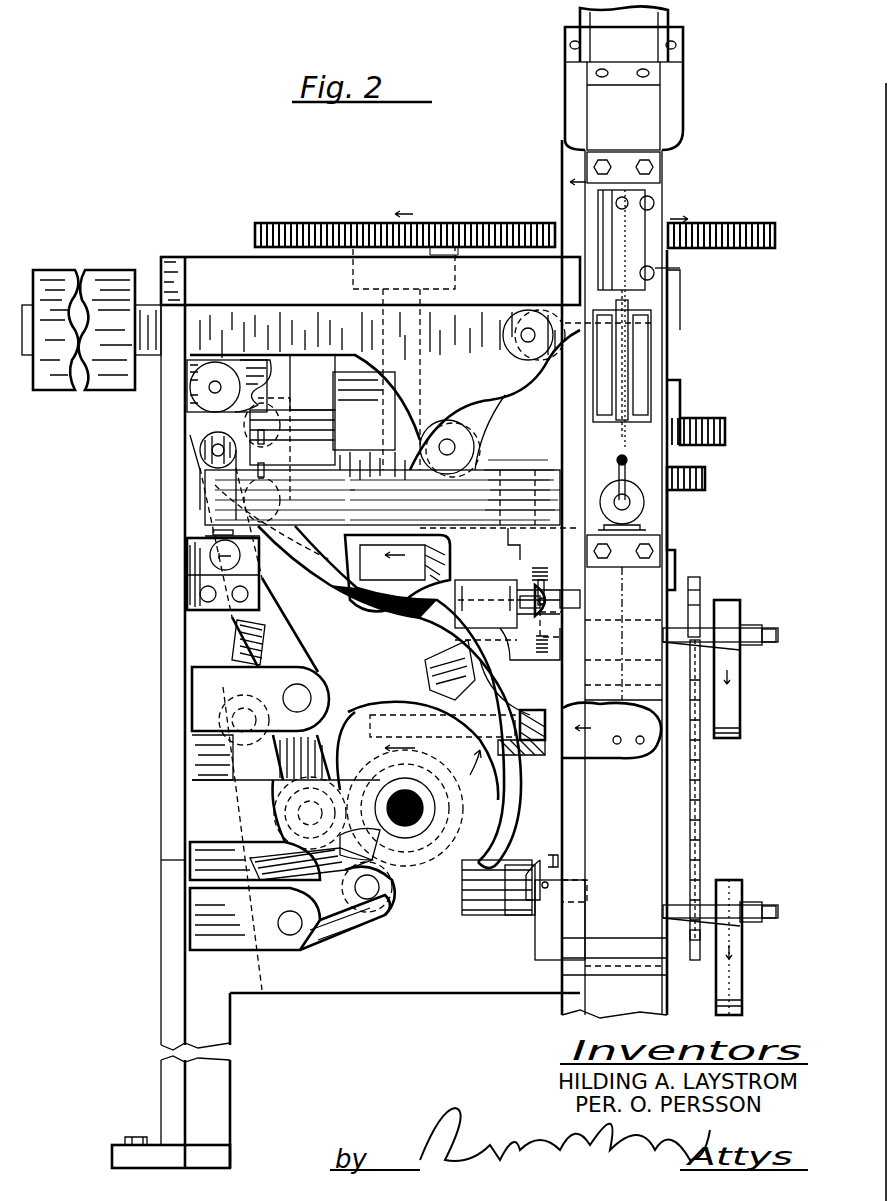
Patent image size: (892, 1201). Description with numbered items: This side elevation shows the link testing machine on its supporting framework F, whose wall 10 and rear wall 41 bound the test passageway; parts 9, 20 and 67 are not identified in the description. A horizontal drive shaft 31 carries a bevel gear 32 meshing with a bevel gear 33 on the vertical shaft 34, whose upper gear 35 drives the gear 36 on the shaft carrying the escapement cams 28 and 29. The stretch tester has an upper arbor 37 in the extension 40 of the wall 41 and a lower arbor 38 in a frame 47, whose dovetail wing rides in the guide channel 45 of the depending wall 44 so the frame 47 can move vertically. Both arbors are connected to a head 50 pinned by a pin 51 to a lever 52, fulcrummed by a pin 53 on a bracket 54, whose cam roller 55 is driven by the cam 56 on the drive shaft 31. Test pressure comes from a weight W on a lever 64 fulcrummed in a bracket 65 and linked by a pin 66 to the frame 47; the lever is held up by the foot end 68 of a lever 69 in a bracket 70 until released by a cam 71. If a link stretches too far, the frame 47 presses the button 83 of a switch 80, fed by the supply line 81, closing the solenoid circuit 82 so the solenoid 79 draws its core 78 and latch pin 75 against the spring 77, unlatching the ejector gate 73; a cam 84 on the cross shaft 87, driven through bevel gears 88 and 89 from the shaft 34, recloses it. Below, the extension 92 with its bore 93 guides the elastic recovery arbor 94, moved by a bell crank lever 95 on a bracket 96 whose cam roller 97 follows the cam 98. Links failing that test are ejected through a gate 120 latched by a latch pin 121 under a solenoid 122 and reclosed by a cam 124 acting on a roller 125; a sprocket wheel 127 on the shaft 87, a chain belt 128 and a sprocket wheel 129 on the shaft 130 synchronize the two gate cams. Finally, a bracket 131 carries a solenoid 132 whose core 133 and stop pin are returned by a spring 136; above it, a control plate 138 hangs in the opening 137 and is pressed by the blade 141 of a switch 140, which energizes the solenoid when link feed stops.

The frame column head 9 is at (650, 130).
The wall 10 is at (650, 366).
The upper housing 20 is at (650, 32).
The cam 28 is at (722, 428).
The cam 29 is at (706, 478).
The drive shaft 31 is at (348, 876).
The bevel gear 32 is at (440, 808).
The bevel gear 33 is at (450, 730).
The vertical shaft 34 is at (395, 542).
The gear 35 is at (462, 224).
The gear 36 is at (752, 226).
The upper arbor 37 is at (305, 418).
The lower arbor 38 is at (320, 462).
The extension 40 is at (345, 382).
The rear wall 41 is at (568, 998).
The depending wall 44 is at (508, 542).
The dovetail guide channel 45 is at (468, 528).
The frame 47 is at (518, 492).
The head 50 is at (256, 392).
The pin 51 is at (210, 452).
The lever 52 is at (298, 655).
The pin 53 is at (300, 698).
The bracket 54 is at (218, 712).
The cam roller 55 is at (310, 870).
The cam 56 is at (398, 888).
The lever 64 is at (212, 322).
The bracket 65 is at (535, 325).
The pin 66 is at (445, 442).
The lever 67 is at (458, 436).
The foot end 68 is at (252, 372).
The lever 69 is at (320, 578).
The bracket 70 is at (200, 402).
The cam 71 is at (445, 895).
The gate 73 is at (615, 708).
The latch pin 75 is at (560, 600).
The spring 77 is at (545, 572).
The core 78 is at (528, 592).
The solenoid 79 is at (512, 660).
The switch 80 is at (202, 570).
The supply line 81 is at (240, 605).
The solenoid circuit 82 is at (328, 552).
The button 83 is at (200, 534).
The cam 84 is at (730, 708).
The cross shaft 87 is at (724, 600).
The bevel gear 88 is at (468, 690).
The bevel gear 89 is at (455, 588).
The extension 92 is at (524, 748).
The bore 93 is at (498, 696).
The arbor 94 is at (380, 720).
The bell crank lever 95 is at (240, 870).
The bracket 96 is at (295, 945).
The cam roller 97 is at (388, 915).
The cam 98 is at (370, 712).
The ejector gate 120 is at (566, 960).
The latch pin 121 is at (572, 900).
The solenoid 122 is at (510, 915).
The cam 124 is at (730, 970).
The roller 125 is at (735, 895).
The sprocket wheel 127 is at (703, 595).
The chain belt 128 is at (702, 782).
The sprocket wheel 129 is at (698, 962).
The shaft 130 is at (708, 888).
The bracket 131 is at (628, 615).
The solenoid 132 is at (628, 492).
The core 133 is at (640, 506).
The spring 136 is at (623, 448).
The opening 137 is at (650, 352).
The control plate 138 is at (640, 382).
The switch 140 is at (655, 213).
The blade 141 is at (660, 296).
The supporting framework F is at (205, 868).
The weight W is at (113, 280).